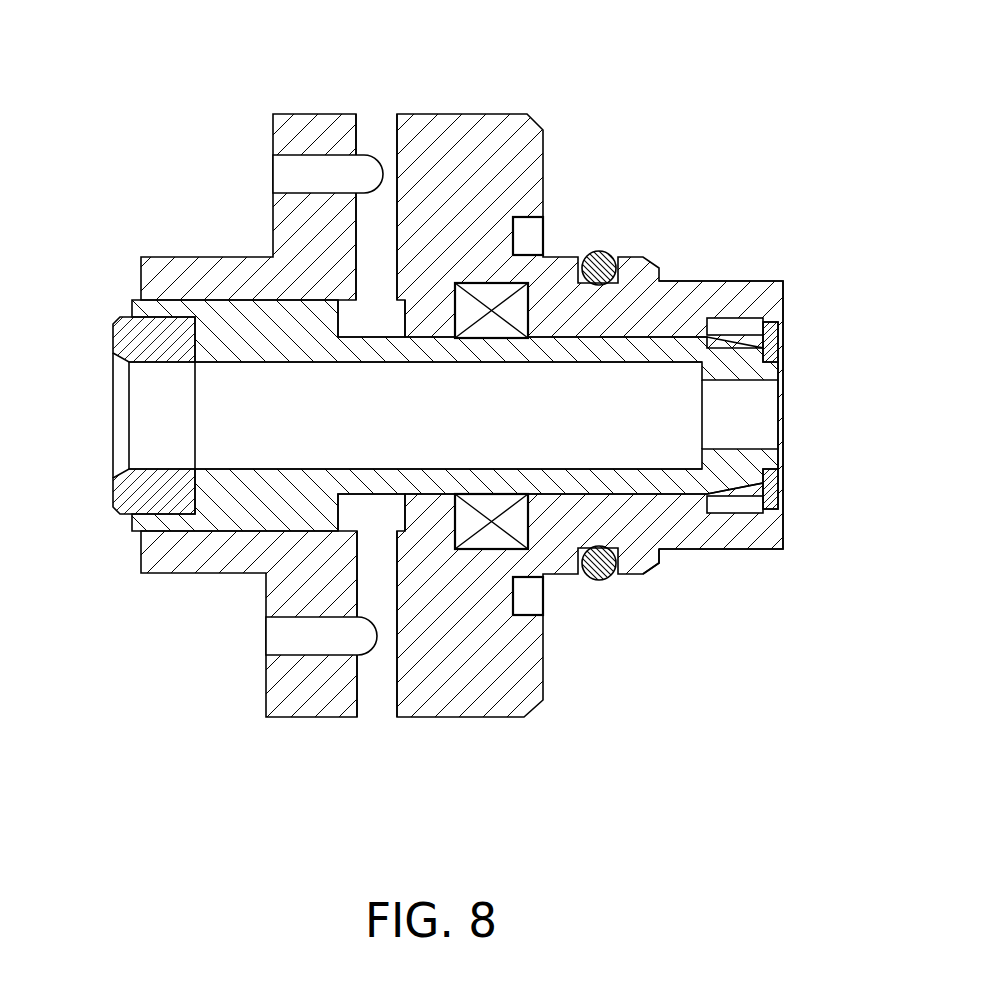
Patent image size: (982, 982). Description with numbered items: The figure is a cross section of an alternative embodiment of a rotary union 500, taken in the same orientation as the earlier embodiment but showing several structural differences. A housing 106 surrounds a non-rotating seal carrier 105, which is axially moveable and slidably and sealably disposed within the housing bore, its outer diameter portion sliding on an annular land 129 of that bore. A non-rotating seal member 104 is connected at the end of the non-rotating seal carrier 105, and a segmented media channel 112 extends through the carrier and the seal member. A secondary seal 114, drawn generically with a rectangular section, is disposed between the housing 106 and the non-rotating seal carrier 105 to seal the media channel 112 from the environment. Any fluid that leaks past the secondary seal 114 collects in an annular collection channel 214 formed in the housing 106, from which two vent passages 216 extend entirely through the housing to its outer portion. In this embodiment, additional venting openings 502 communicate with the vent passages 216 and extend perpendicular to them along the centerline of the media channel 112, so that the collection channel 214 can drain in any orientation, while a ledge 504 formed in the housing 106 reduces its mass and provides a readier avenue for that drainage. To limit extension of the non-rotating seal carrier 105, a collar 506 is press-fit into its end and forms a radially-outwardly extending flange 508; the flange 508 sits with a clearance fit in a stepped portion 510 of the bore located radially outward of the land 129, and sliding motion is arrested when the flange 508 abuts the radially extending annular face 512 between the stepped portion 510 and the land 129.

The rotary union 500 is at (141, 76).
The additional venting openings 502 is at (282, 172).
The ledge 504 is at (176, 238).
The collar 506 is at (768, 458).
The flange 508 is at (771, 337).
The stepped portion 510 is at (735, 503).
The radially extending annular face 512 is at (710, 333).
The collection channel 214 is at (360, 322).
The vent passage 216 is at (390, 127).
The housing 106 is at (533, 157).
The non-rotating seal carrier 105 is at (672, 347).
The non-rotating seal member 104 is at (160, 353).
The media channel 112 is at (477, 429).
The secondary seal 114 is at (482, 537).
The land 129 is at (656, 491).